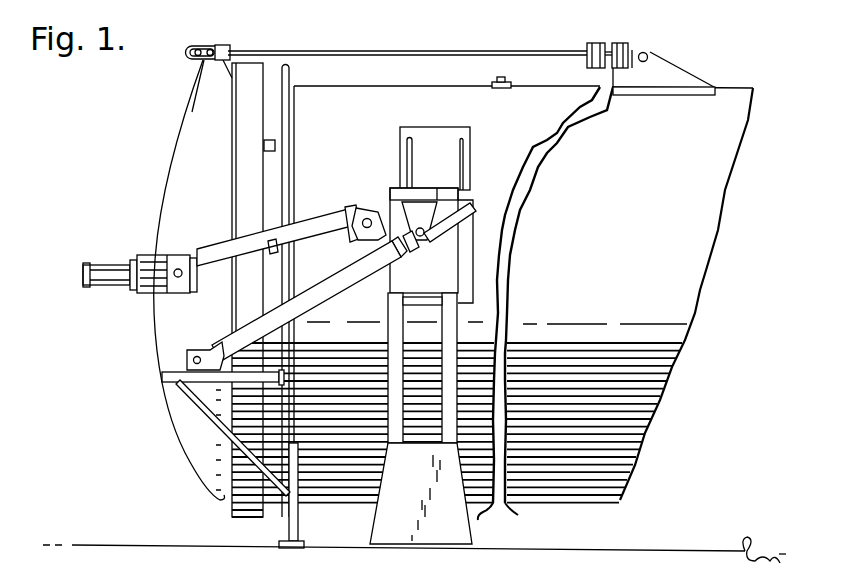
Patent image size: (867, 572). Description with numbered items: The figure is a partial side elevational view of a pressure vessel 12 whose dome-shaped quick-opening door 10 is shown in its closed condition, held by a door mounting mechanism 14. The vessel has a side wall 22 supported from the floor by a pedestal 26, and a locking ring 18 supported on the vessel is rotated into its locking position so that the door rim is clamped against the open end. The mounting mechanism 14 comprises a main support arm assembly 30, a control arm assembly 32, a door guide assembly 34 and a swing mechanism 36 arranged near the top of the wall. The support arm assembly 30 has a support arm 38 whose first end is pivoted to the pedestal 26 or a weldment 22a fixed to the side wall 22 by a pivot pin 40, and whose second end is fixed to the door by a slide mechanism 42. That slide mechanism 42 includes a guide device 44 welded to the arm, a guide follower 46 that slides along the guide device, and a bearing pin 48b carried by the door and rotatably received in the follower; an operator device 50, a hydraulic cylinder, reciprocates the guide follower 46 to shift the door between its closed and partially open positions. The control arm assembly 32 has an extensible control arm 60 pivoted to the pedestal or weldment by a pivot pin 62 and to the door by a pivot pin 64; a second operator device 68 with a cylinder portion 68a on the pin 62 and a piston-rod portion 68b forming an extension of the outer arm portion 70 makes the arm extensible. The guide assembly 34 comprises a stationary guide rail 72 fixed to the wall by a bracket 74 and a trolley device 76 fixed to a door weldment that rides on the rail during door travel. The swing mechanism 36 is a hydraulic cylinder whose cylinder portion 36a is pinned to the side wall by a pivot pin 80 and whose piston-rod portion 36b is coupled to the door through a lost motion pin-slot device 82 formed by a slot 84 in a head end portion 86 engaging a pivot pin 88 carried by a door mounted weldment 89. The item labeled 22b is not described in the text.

The door 10 is at (174, 156).
The pressure vessel 12 is at (483, 508).
The door mounting mechanism 14 is at (428, 67).
The locking ring 18 is at (256, 62).
The side wall 22 is at (660, 168).
The weldment 22a is at (452, 155).
The clamp 22b is at (512, 83).
The pedestal 26 is at (499, 315).
The main support arm assembly 30 is at (328, 184).
The control arm assembly 32 is at (320, 322).
The door guide assembly 34 is at (190, 414).
The mechanism for swinging the door 36 is at (454, 46).
The cylinder portion 36a is at (620, 44).
The piston-rod portion 36b is at (390, 50).
The support arm 38 is at (318, 246).
The pivot pin 40 is at (367, 217).
The slide mechanism 42 is at (168, 240).
The guide device 44 is at (140, 300).
The guide follower 46 is at (178, 300).
The bearing pin 48b is at (178, 268).
The operator device 50 is at (100, 262).
The extensible control arm 60 is at (344, 292).
The pivot pin 62 is at (421, 254).
The pivot pin 64 is at (200, 354).
The second operator device 68 is at (476, 206).
The cylinder portion 68a is at (495, 230).
The piston-rod portion 68b is at (410, 254).
The outer arm portion 70 is at (333, 282).
The guide rail 72 is at (158, 383).
The bracket 74 is at (210, 428).
The trolley device 76 is at (212, 344).
The pivot pin 80 is at (650, 58).
The lost motion pin-slot device 82 is at (180, 63).
The slot 84 is at (200, 44).
The head end portion 86 is at (228, 47).
The pivot pin 88 is at (214, 45).
The door mounted weldment 89 is at (200, 78).